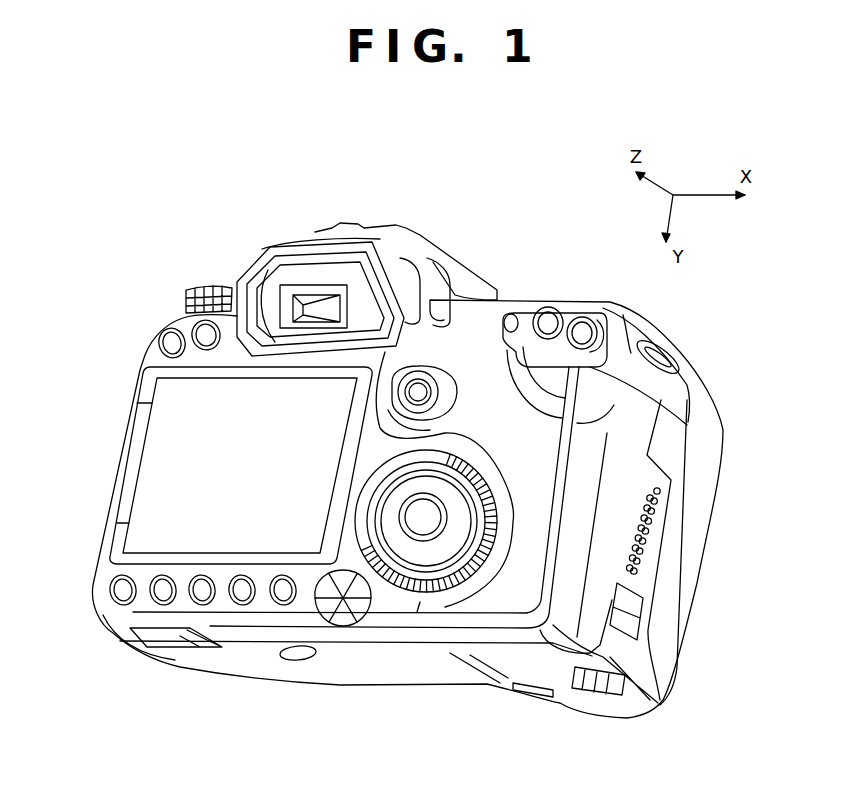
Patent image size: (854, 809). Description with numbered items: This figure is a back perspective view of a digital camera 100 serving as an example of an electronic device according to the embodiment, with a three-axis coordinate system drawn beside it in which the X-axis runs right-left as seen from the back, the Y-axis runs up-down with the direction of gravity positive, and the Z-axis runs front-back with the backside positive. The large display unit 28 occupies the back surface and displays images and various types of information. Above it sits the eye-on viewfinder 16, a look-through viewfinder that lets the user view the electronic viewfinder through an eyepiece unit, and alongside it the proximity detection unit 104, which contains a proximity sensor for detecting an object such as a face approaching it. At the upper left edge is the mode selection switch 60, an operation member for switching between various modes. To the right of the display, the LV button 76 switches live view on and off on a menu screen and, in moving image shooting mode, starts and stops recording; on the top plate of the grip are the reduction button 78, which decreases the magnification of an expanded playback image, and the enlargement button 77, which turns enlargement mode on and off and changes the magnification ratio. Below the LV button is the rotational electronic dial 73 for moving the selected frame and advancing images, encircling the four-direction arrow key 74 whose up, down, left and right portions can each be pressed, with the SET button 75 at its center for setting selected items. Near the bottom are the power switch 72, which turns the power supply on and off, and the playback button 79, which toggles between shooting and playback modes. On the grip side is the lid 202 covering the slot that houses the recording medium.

The digital camera 100 is at (448, 210).
The proximity detection unit 104 is at (283, 338).
The eye-on viewfinder 16 is at (317, 317).
The mode selection switch 60 is at (193, 289).
The display unit 28 is at (183, 416).
The LV button 76 is at (418, 392).
The reduction button 78 is at (543, 322).
The enlargement button 77 is at (577, 333).
The lid 202 is at (620, 513).
The playback button 79 is at (280, 593).
The power switch 72 is at (343, 612).
The electronic dial 73 is at (383, 590).
The arrow key 74 is at (403, 550).
The SET button 75 is at (420, 514).